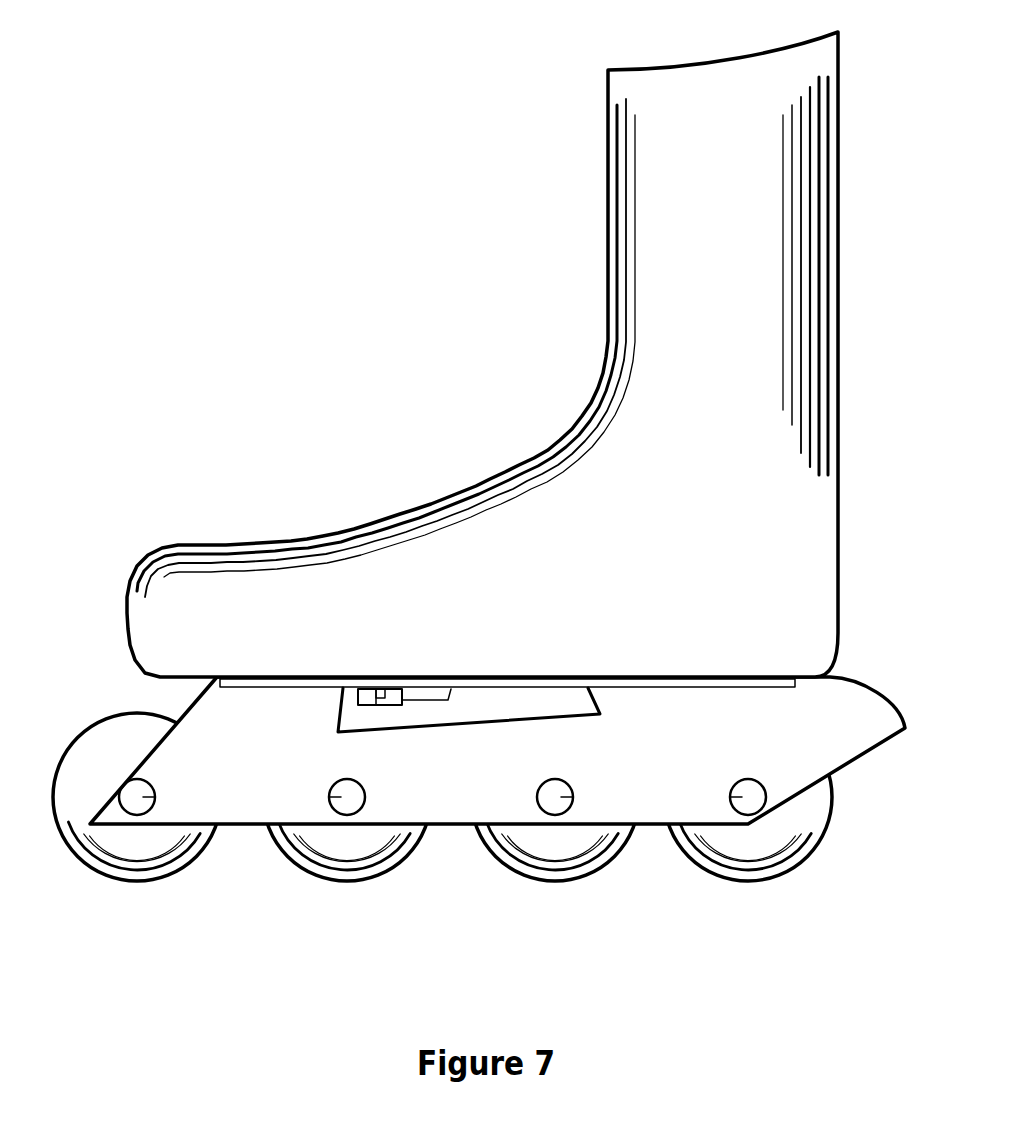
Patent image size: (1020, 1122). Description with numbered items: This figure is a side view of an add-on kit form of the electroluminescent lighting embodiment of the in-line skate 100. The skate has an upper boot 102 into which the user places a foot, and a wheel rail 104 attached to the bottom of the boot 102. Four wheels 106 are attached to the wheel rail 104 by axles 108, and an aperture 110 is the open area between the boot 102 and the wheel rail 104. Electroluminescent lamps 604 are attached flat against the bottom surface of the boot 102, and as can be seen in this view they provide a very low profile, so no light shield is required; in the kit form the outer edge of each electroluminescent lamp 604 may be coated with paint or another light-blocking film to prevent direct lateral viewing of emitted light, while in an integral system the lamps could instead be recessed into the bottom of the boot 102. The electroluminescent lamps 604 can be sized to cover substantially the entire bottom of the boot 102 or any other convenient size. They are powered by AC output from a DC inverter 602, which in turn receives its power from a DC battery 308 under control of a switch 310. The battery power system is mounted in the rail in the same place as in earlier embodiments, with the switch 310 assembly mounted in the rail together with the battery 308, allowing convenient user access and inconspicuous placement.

The in-line skate 100 is at (432, 364).
The boot 102 is at (697, 78).
The wheel rail 104 is at (845, 715).
The wheels 106 is at (130, 843).
The axles 108 is at (329, 797).
The aperture 110 is at (540, 705).
The DC battery 308 is at (358, 697).
The switch 310 is at (377, 699).
The DC inverter 602 is at (450, 700).
The electroluminescent lamps 604 is at (712, 688).